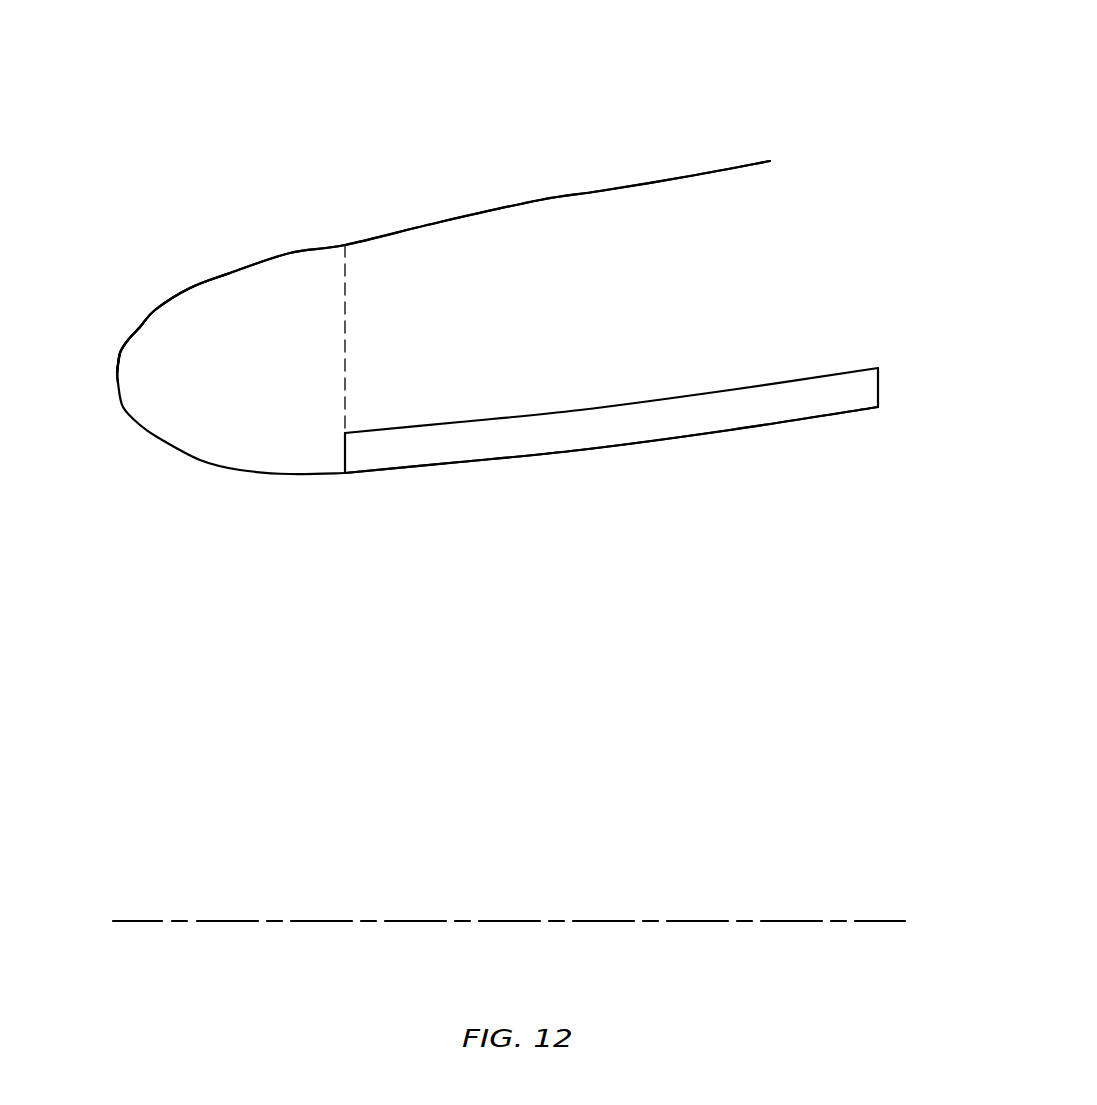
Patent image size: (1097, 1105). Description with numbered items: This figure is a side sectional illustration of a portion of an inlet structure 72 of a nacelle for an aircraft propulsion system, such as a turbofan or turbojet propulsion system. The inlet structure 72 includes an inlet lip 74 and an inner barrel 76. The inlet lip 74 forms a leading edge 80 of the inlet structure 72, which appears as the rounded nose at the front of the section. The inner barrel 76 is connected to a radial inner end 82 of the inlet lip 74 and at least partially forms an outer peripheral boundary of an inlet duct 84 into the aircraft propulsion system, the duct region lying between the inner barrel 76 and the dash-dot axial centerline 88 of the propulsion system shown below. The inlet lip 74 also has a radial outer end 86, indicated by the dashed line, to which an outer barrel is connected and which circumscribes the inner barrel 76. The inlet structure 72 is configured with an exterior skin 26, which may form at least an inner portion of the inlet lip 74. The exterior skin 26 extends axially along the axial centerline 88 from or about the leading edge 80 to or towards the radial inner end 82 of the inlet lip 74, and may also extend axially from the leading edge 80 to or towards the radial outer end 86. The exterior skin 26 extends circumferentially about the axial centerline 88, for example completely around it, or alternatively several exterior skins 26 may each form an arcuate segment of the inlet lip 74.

The inlet structure 72 is at (768, 100).
The inlet lip 74 is at (141, 297).
The inner barrel 76 is at (538, 189).
The leading edge 80 is at (117, 387).
The exterior skin 26 is at (203, 463).
The radial inner end 82 is at (345, 473).
The inlet duct 84 is at (354, 722).
The radial outer end 86 is at (345, 245).
The axial centerline 88 is at (893, 918).